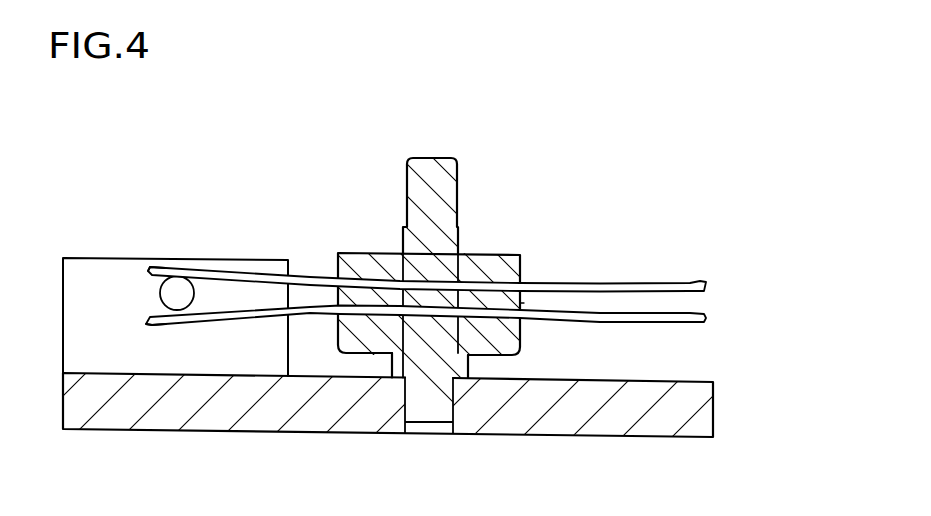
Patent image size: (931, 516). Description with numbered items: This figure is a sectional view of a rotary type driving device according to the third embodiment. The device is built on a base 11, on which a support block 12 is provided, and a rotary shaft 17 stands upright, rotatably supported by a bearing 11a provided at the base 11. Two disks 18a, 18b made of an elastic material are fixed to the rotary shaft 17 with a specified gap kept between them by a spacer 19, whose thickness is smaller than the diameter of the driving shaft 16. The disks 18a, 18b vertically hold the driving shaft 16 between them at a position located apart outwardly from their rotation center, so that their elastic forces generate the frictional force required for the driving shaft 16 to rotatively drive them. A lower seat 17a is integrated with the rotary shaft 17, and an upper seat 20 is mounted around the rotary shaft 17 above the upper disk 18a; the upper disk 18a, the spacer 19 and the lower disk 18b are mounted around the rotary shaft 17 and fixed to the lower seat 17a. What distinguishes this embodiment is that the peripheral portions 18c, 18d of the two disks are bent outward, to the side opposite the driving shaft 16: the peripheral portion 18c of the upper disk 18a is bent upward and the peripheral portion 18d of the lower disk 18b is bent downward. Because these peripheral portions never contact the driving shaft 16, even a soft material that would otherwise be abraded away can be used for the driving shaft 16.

The base 11 is at (690, 410).
The bearing 11a is at (402, 401).
The support block 12 is at (72, 313).
The driving shaft 16 is at (159, 293).
The rotary shaft 17 is at (457, 168).
The lower seat 17a is at (507, 340).
The upper disk 18a is at (676, 283).
The lower disk 18b is at (682, 322).
The peripheral portion of the upper disk 18c is at (158, 270).
The peripheral portion of the lower disk 18d is at (158, 326).
The spacer 19 is at (523, 303).
The upper seat 20 is at (353, 253).